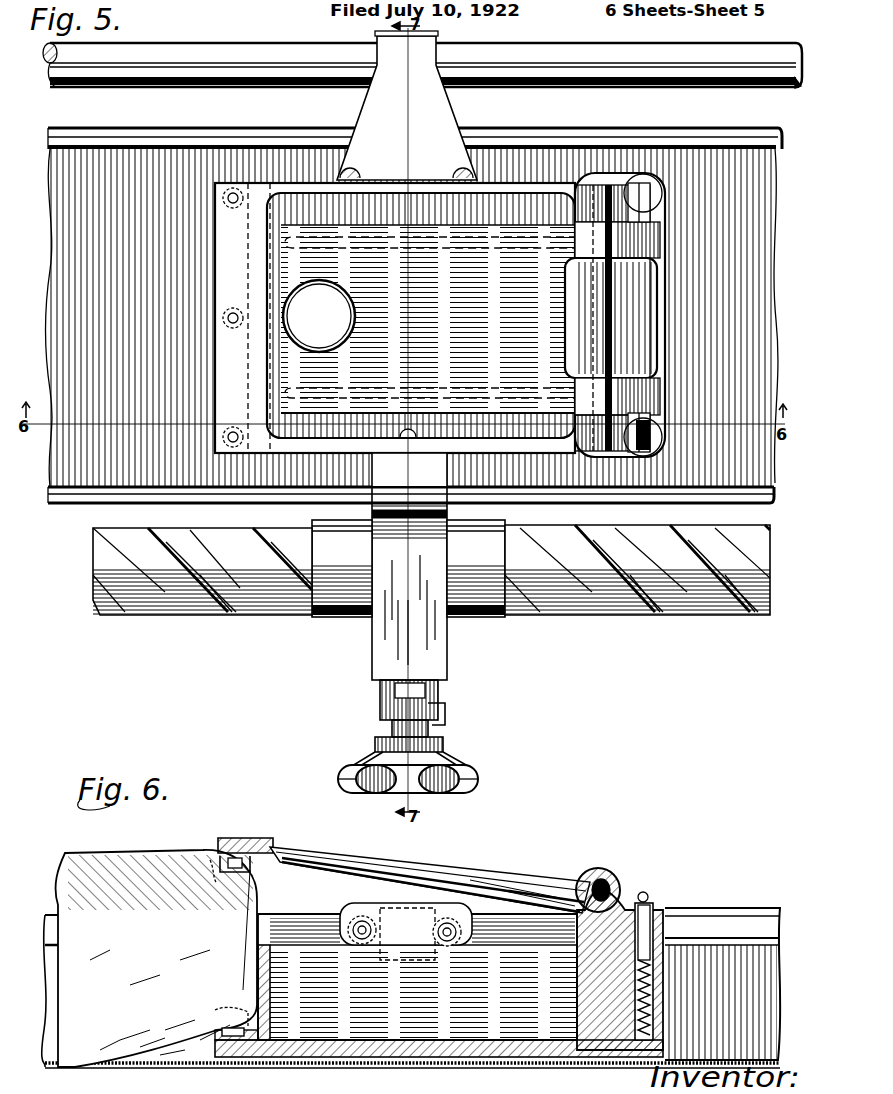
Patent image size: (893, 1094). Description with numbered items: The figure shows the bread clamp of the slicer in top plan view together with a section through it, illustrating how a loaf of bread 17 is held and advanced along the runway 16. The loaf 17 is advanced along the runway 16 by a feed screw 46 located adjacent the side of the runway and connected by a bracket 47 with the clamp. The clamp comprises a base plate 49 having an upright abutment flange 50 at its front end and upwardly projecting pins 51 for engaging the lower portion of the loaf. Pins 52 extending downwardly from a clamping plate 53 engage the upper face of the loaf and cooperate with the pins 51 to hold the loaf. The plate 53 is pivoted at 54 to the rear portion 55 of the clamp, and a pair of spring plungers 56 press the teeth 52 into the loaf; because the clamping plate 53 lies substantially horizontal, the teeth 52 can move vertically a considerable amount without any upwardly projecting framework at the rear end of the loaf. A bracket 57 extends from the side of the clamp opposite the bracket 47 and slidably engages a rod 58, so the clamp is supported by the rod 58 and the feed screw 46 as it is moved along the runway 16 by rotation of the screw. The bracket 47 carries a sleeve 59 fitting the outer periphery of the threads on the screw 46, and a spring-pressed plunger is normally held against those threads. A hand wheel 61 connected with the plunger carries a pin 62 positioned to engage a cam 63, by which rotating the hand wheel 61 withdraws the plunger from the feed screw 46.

In FIG. 5, the runway 16 is at (98, 470).
In FIG. 6, the runway 16 is at (190, 1072).
In FIG. 6, the loaf of bread 17 is at (120, 858).
In FIG. 5, the feed screw 46 is at (230, 612).
In FIG. 5, the bracket 47 is at (390, 470).
In FIG. 6, the base plate 49 is at (415, 1040).
In FIG. 6, the abutment flange 50 is at (288, 995).
In FIG. 6, the pins 51 is at (215, 1012).
In FIG. 6, the pins 52 is at (215, 858).
In FIG. 5, the clamping plate 53 is at (448, 252).
In FIG. 6, the clamping plate 53 is at (305, 852).
In FIG. 5, the pivot 54 is at (600, 322).
In FIG. 6, the pivot 54 is at (588, 876).
In FIG. 6, the rear portion of the clamp 55 is at (585, 985).
In FIG. 5, the spring plungers 56 is at (640, 450).
In FIG. 6, the spring plungers 56 is at (655, 905).
In FIG. 5, the bracket 57 is at (435, 115).
In FIG. 5, the rod 58 is at (632, 55).
In FIG. 5, the sleeve 59 is at (485, 600).
In FIG. 5, the hand wheel 61 is at (445, 776).
In FIG. 5, the pin 62 is at (438, 700).
In FIG. 5, the cam 63 is at (445, 718).